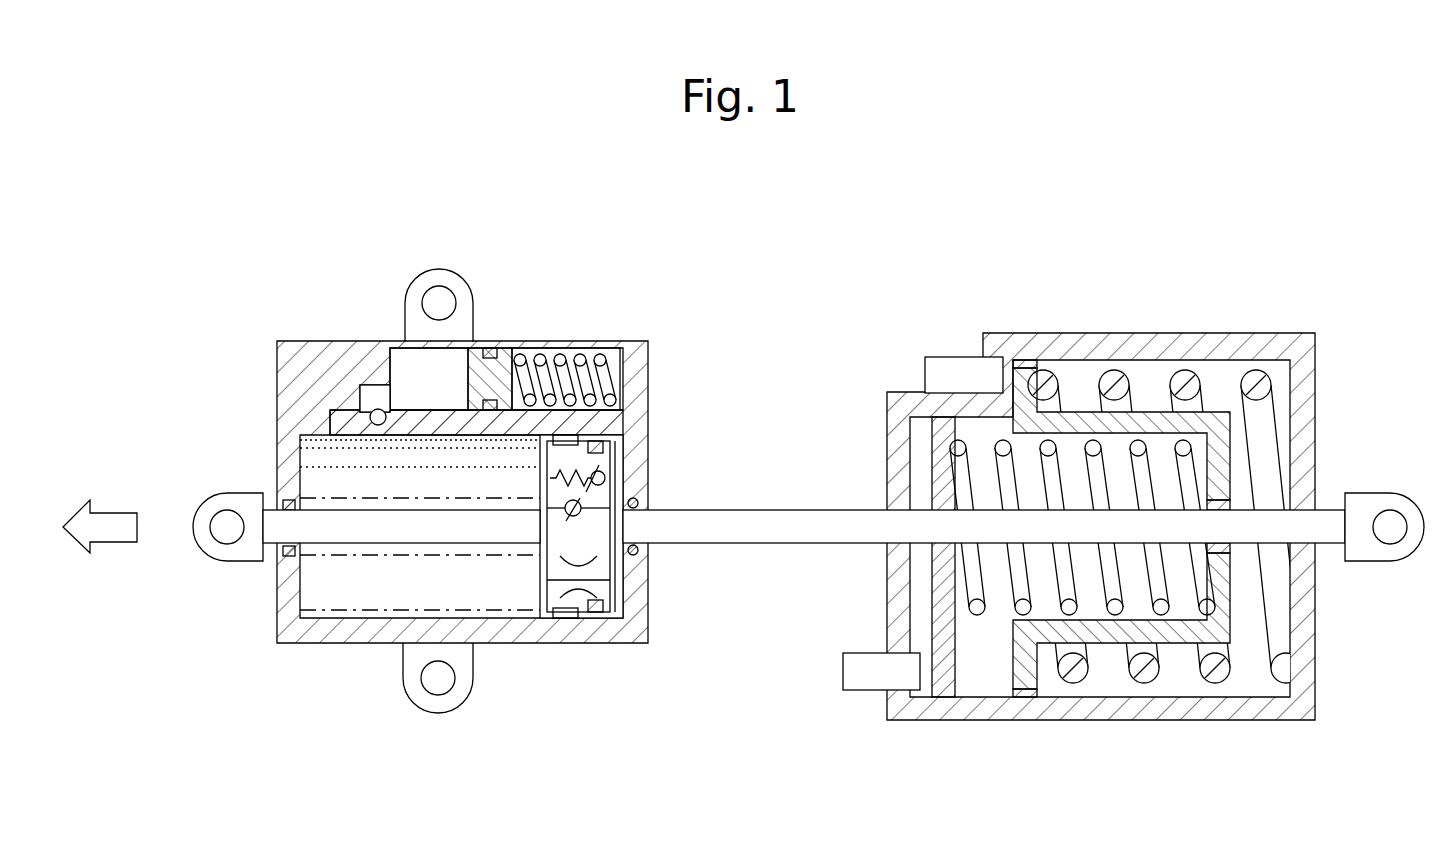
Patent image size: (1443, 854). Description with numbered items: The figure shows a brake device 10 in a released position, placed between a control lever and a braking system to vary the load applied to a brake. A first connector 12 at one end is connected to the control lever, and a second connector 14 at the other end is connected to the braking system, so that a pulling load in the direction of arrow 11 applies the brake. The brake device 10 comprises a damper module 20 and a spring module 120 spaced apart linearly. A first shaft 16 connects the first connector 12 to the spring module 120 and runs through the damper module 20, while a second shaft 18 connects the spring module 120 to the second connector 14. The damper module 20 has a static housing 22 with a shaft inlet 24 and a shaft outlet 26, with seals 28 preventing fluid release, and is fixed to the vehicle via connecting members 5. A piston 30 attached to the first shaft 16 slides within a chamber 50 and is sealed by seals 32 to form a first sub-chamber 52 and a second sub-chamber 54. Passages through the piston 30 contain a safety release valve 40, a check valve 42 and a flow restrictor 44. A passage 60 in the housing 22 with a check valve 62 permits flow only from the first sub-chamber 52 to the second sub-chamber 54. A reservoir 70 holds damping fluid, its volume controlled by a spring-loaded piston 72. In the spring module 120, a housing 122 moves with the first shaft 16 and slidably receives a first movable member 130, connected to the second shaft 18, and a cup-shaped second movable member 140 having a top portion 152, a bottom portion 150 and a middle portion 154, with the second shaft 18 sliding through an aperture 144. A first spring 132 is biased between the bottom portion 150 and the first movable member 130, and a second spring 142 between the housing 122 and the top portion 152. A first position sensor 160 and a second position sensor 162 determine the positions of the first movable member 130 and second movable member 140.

The connecting members 5 is at (415, 279).
The brake device 10 is at (143, 208).
The arrow 11 is at (108, 545).
The first connector 12 is at (213, 493).
The second connector 14 is at (1398, 492).
The first shaft 16 is at (808, 518).
The second shaft 18 is at (1332, 562).
The damper module 20 is at (455, 213).
The housing 22 is at (295, 636).
The shaft inlet 24 is at (280, 506).
The shaft outlet 26 is at (640, 504).
The seals 28 is at (292, 560).
The piston 30 is at (537, 602).
The seals 32 is at (566, 432).
The safety release valve 40 is at (585, 470).
The check valve 42 is at (604, 482).
The flow restrictor 44 is at (587, 590).
The chamber 50 is at (322, 460).
The first sub-chamber 52 is at (370, 595).
The second sub-chamber 54 is at (630, 612).
The passage 60 is at (338, 412).
The check valve 62 is at (372, 410).
The reservoir 70 is at (412, 370).
The spring-loaded piston 72 is at (503, 357).
The spring module 120 is at (1083, 213).
The housing 122 is at (888, 592).
The first movable member 130 is at (950, 698).
The first spring 132 is at (980, 612).
The second movable member 140 is at (1037, 672).
The second spring 142 is at (1185, 378).
The aperture 144 is at (1224, 506).
The bottom portion 150 is at (1232, 614).
The top portion 152 is at (950, 427).
The middle portion 154 is at (1142, 412).
The first position sensor 160 is at (882, 690).
The second position sensor 162 is at (945, 362).